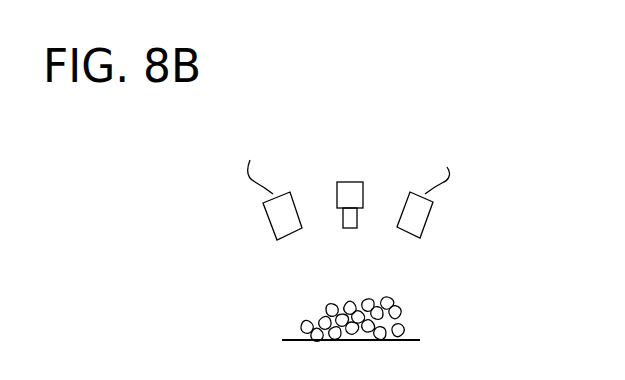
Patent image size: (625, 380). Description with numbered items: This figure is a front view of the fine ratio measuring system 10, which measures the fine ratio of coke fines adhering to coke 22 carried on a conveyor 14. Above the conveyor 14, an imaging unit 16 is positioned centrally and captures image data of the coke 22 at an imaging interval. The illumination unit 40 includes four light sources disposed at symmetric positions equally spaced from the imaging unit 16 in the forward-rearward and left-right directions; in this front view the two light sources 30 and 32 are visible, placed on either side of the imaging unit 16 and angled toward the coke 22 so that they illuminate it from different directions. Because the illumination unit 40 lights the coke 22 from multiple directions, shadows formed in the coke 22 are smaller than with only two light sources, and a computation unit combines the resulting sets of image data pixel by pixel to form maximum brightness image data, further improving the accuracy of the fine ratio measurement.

The fine ratio measuring system 10 is at (448, 67).
The illumination unit 40 is at (393, 42).
The light source 32 is at (250, 160).
The light source 30 is at (447, 167).
The imaging unit 16 is at (335, 207).
The coke 22 is at (392, 302).
The conveyor 14 is at (418, 340).